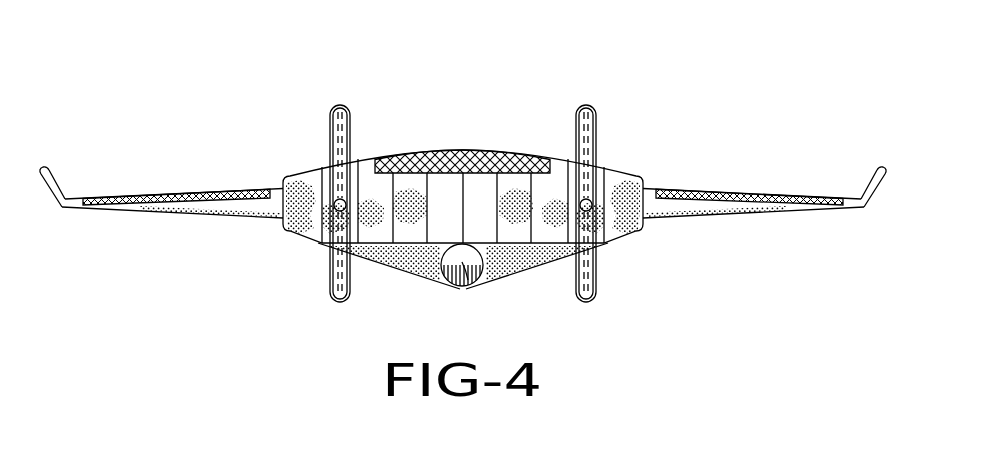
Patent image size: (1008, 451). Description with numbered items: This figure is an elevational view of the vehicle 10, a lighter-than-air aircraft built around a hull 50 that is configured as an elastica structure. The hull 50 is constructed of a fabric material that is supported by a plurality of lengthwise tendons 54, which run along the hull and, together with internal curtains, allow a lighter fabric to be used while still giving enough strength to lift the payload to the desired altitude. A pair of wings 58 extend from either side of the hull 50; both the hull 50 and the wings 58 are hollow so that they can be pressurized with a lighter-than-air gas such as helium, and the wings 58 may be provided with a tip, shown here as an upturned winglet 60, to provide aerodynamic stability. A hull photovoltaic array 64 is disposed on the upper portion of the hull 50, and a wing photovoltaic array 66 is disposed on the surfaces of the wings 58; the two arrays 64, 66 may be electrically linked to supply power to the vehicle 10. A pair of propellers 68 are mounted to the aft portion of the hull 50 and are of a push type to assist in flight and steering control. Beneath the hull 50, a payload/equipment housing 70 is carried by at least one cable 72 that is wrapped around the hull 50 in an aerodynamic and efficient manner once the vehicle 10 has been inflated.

The vehicle 10 is at (156, 113).
The hull 50 is at (509, 151).
The lengthwise tendons 54 is at (417, 187).
The wings 58 is at (174, 209).
The winglet 60 is at (57, 183).
The hull photovoltaic array 64 is at (440, 152).
The wing photovoltaic array 66 is at (216, 195).
The propellers 68 is at (337, 124).
The payload/equipment housing 70 is at (466, 290).
The cable 72 is at (386, 268).